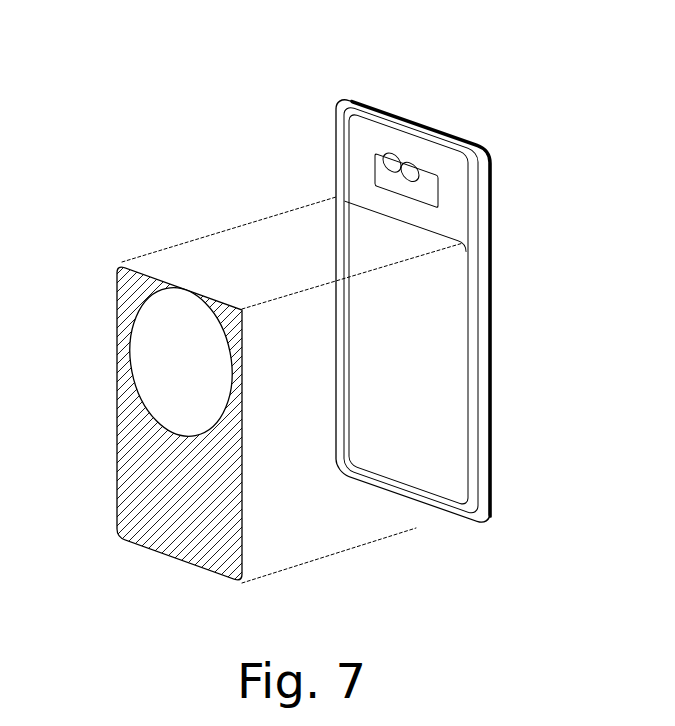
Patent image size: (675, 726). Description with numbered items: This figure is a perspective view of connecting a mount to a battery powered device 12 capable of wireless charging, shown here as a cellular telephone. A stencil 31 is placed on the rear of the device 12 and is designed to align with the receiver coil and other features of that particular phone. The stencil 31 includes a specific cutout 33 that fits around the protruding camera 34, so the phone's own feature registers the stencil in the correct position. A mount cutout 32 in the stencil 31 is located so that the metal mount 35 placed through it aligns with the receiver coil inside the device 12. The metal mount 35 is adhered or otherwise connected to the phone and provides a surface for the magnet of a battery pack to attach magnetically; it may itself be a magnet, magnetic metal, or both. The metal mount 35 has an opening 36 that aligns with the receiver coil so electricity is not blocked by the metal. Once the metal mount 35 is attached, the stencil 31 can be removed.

The device 12 is at (421, 267).
The stencil 31 is at (489, 197).
The mount cutout 32 is at (385, 313).
The cutout 33 is at (375, 167).
The protruding camera 34 is at (381, 157).
The metal mount 35 is at (200, 463).
The opening 36 is at (203, 368).